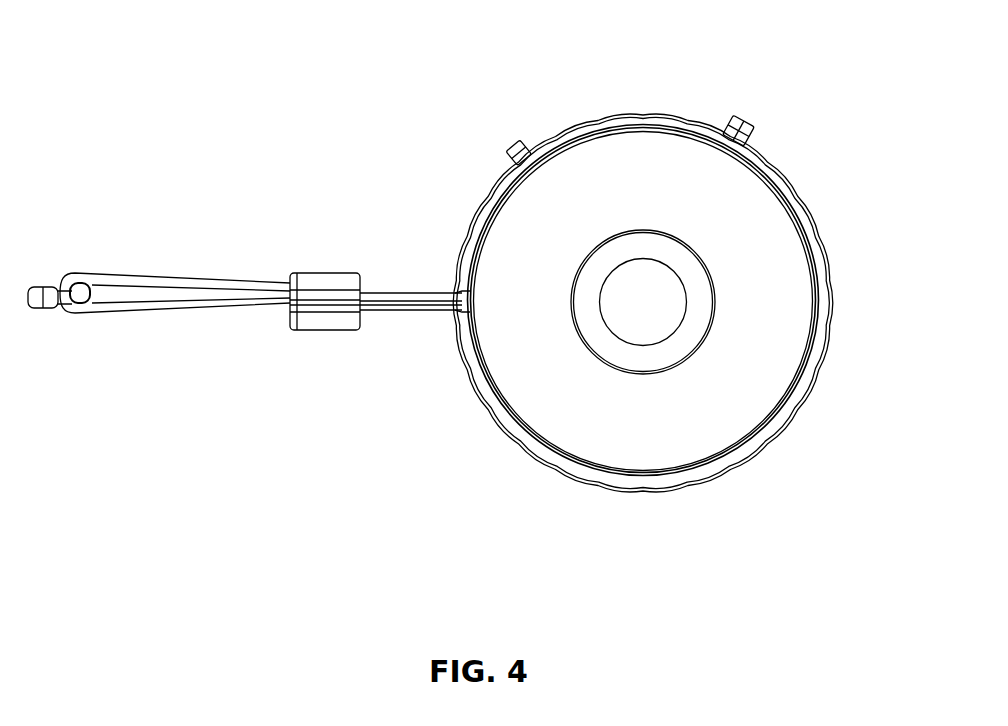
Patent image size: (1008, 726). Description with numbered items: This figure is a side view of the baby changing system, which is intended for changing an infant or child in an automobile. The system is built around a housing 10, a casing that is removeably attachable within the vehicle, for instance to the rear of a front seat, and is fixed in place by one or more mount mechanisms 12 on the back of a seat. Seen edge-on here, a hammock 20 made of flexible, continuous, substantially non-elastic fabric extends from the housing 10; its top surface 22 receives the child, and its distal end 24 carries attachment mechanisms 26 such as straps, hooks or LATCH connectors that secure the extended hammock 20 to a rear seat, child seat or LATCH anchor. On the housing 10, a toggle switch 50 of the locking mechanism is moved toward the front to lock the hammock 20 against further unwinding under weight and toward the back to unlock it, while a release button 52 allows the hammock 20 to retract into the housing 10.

The housing 10 is at (640, 114).
The mount mechanism 12 is at (728, 120).
The hammock 20 is at (418, 305).
The top surface 22 is at (433, 277).
The distal end 24 is at (342, 305).
The attachment mechanism 26 is at (57, 306).
The toggle switch 50 is at (522, 143).
The release button 52 is at (647, 297).